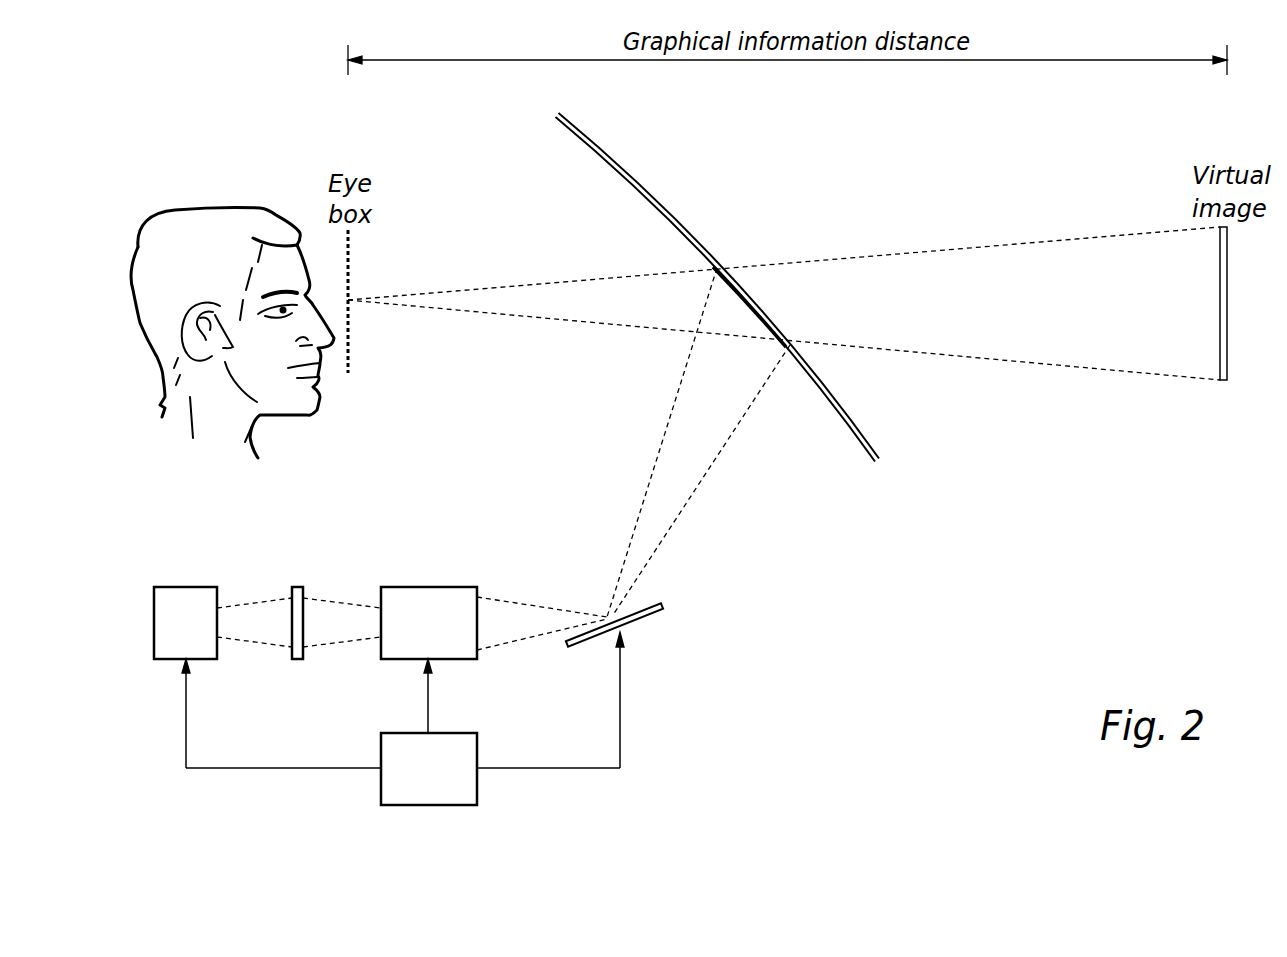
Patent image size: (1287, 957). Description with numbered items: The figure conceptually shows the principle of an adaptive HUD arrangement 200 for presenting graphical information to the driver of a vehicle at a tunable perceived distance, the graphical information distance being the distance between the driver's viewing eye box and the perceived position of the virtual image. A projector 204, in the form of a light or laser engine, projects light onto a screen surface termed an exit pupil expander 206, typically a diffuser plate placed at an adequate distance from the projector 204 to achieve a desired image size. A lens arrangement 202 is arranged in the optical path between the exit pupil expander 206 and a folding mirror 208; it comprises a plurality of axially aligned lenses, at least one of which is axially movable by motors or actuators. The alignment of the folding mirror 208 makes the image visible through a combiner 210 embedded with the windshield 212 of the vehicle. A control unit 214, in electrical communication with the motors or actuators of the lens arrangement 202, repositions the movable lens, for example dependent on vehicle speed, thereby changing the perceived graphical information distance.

The adaptive HUD arrangement 200 is at (502, 129).
The lens arrangement 202 is at (420, 587).
The projector 204 is at (187, 587).
The exit pupil expander 206 is at (300, 587).
The folding mirror 208 is at (590, 640).
The combiner 210 is at (785, 350).
The windshield 212 is at (647, 177).
The control unit 214 is at (403, 733).